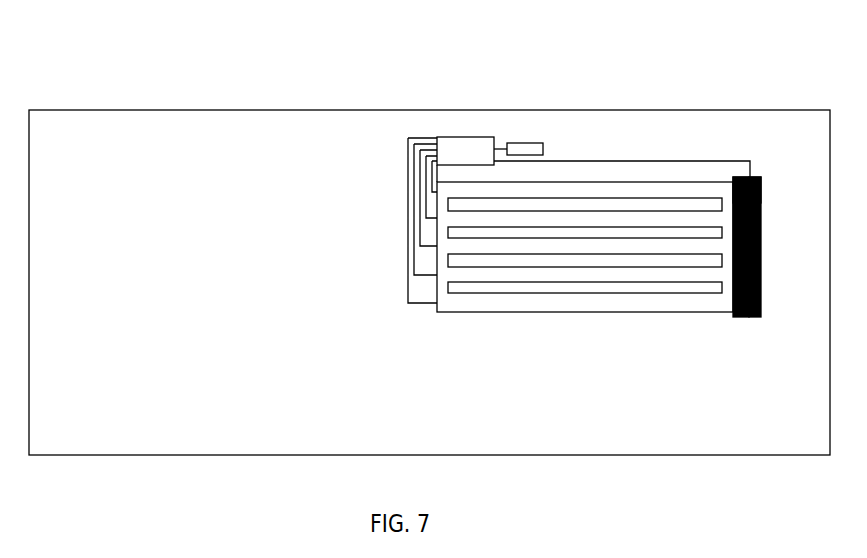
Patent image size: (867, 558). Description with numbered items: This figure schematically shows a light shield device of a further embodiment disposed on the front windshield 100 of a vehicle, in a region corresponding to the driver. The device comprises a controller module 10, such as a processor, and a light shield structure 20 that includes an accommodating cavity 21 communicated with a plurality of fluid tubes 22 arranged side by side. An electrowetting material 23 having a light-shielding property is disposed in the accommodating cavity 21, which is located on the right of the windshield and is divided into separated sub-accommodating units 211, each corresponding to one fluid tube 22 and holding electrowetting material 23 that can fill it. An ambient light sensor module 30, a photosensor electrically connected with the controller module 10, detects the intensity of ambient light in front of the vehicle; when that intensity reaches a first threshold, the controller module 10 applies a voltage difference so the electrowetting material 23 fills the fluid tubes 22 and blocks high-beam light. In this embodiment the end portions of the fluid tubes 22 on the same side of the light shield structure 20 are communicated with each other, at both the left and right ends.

The front windshield 100 is at (328, 133).
The controller module 10 is at (464, 148).
The ambient light sensor module 30 is at (533, 145).
The light shield structure 20 is at (619, 175).
The fluid tube 22 is at (593, 187).
The electrowetting material 23 is at (742, 177).
The accommodating cavity 21 is at (757, 177).
The sub-accommodating unit 211 is at (763, 177).